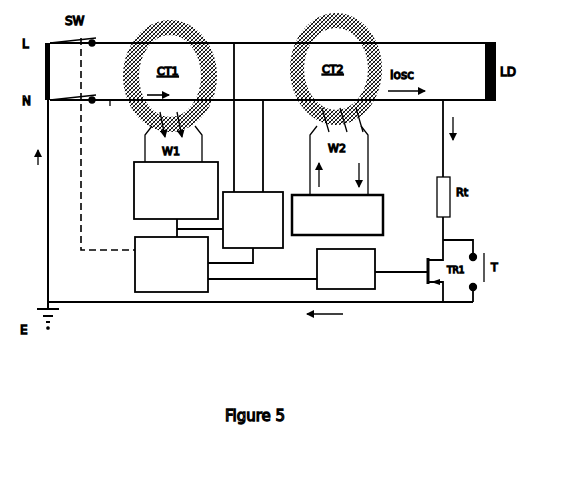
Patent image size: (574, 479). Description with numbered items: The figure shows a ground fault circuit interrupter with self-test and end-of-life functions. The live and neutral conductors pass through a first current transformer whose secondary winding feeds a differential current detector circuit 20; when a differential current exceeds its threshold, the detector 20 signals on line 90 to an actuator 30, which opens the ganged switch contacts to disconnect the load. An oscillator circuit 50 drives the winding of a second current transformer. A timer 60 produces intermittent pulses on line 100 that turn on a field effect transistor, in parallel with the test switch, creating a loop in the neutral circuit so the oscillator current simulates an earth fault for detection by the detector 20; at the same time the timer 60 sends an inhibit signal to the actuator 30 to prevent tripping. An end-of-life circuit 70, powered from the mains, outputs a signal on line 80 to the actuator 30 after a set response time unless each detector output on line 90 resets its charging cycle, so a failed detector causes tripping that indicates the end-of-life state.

The differential current detector circuit 20 is at (134, 191).
The actuator 30 is at (135, 281).
The oscillator circuit 50 is at (383, 215).
The timer 60 is at (365, 289).
The EOL circuit 70 is at (271, 191).
The line 80 is at (242, 265).
The line 90 is at (177, 226).
The line 100 is at (403, 272).